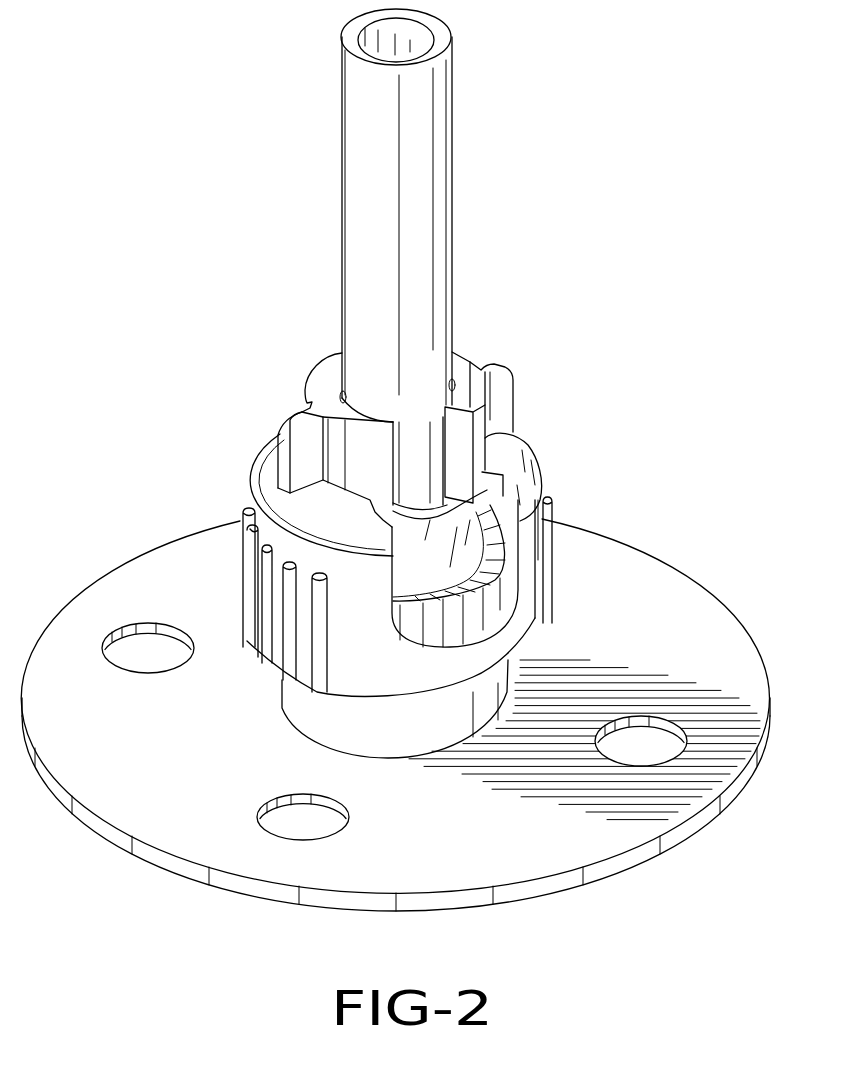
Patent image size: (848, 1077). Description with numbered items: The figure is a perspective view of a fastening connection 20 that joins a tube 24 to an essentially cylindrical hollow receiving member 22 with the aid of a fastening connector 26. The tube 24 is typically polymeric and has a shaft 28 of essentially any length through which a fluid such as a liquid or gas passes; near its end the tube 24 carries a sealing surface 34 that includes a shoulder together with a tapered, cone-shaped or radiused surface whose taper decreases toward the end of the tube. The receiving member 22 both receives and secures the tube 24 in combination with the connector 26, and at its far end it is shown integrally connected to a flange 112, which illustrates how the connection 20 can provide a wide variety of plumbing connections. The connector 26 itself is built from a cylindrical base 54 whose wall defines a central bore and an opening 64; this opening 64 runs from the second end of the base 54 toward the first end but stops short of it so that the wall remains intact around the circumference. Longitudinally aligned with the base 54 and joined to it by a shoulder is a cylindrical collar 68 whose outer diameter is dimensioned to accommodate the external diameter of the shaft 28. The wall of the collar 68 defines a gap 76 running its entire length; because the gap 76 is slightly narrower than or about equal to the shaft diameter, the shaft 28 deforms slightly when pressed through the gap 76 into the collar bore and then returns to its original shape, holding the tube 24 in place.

The fastening connection 20 is at (627, 158).
The receiving member 22 is at (513, 678).
The tube 24 is at (453, 167).
The fastening connector 26 is at (540, 455).
The shaft 28 is at (422, 252).
The sealing surface 34 is at (430, 550).
The cylindrical base 54 is at (533, 558).
The opening 64 is at (330, 554).
The cylindrical collar 68 is at (486, 418).
The gap 76 is at (392, 458).
The flange 112 is at (742, 624).